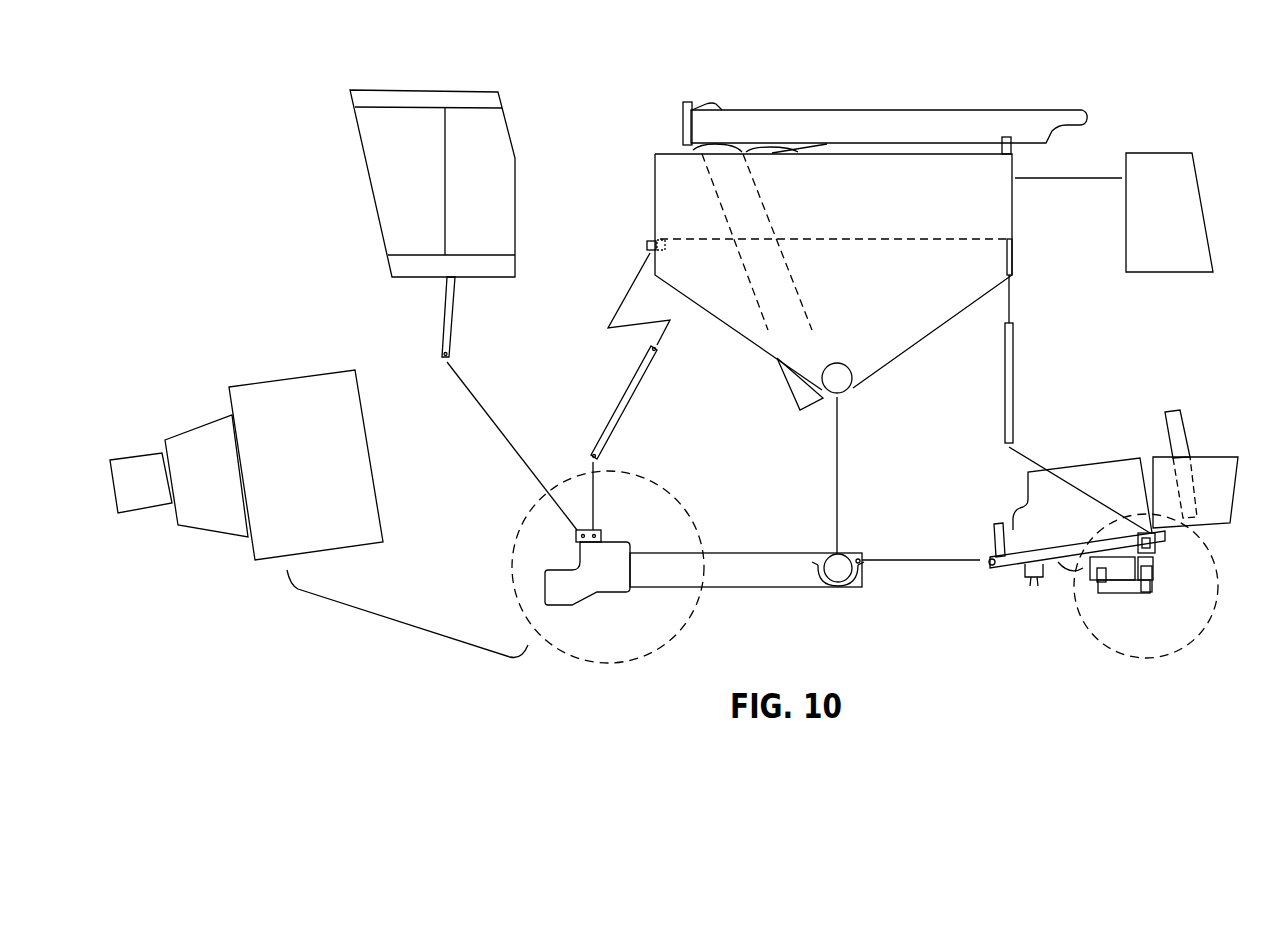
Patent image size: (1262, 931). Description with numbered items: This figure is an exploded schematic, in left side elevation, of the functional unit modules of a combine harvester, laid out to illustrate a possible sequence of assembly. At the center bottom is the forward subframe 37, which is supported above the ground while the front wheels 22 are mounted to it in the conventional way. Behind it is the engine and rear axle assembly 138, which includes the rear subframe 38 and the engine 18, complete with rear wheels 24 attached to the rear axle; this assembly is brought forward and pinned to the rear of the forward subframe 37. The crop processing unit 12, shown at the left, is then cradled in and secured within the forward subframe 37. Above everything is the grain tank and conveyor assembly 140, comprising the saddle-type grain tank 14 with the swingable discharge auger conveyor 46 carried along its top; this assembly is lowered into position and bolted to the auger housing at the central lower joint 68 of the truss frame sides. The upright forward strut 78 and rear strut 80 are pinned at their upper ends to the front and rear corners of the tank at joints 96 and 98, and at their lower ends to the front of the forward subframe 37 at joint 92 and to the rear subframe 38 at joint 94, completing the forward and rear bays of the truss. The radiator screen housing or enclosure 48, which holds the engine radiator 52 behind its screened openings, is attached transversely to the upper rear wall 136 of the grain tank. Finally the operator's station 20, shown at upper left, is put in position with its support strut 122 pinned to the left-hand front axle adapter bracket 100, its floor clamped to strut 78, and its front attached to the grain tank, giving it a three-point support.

The crop processing unit 12 is at (264, 388).
The grain tank 14 is at (828, 157).
The engine 18 is at (1098, 468).
The operator's station 20 is at (377, 180).
The front wheels 22 is at (511, 578).
The rear wheels 24 is at (1215, 613).
The forward subframe 37 is at (729, 589).
The rear subframe 38 is at (1058, 546).
The discharge auger conveyor 46 is at (912, 108).
The enclosure 48 is at (1208, 217).
The engine radiator 52 is at (1183, 432).
The central lower joint 68 is at (846, 589).
The forward strut 78 is at (626, 398).
The rear strut 80 is at (1013, 380).
The joint 92 is at (601, 530).
The joint 94 is at (1157, 541).
The joint 96 is at (647, 240).
The joint 98 is at (1014, 240).
The front axle adapter bracket 100 is at (607, 588).
The strut 122 is at (452, 310).
The upper rear wall 136 is at (1013, 200).
The engine and rear axle assembly 138 is at (1053, 580).
The grain tank and conveyor assembly 140 is at (800, 86).